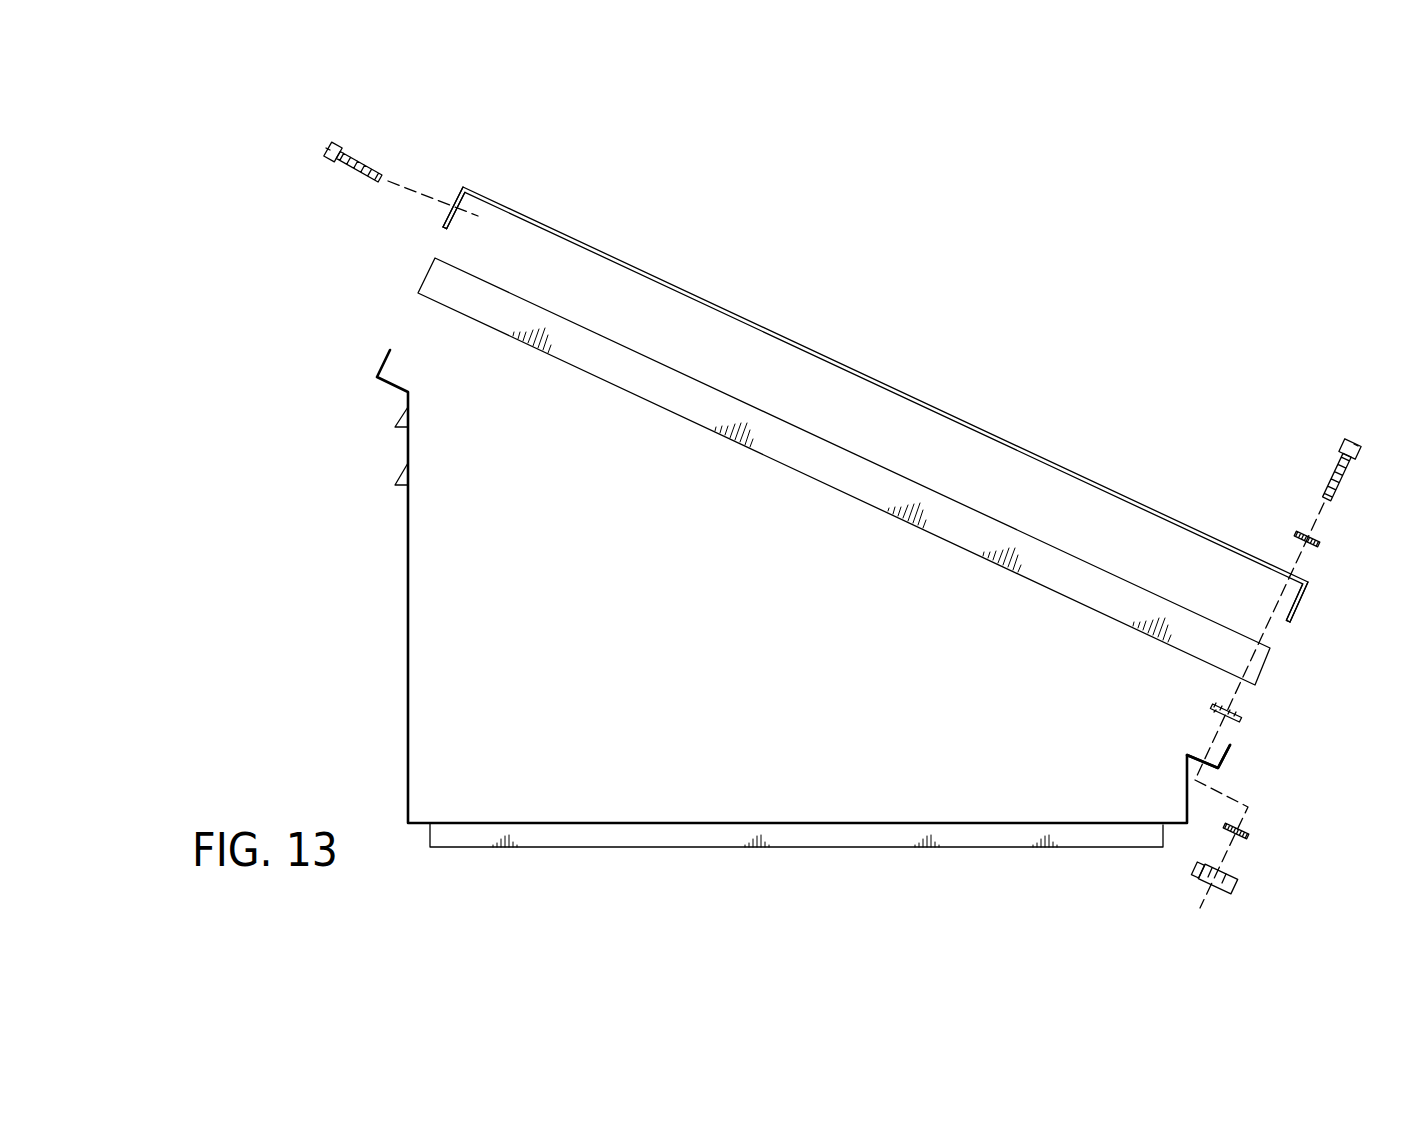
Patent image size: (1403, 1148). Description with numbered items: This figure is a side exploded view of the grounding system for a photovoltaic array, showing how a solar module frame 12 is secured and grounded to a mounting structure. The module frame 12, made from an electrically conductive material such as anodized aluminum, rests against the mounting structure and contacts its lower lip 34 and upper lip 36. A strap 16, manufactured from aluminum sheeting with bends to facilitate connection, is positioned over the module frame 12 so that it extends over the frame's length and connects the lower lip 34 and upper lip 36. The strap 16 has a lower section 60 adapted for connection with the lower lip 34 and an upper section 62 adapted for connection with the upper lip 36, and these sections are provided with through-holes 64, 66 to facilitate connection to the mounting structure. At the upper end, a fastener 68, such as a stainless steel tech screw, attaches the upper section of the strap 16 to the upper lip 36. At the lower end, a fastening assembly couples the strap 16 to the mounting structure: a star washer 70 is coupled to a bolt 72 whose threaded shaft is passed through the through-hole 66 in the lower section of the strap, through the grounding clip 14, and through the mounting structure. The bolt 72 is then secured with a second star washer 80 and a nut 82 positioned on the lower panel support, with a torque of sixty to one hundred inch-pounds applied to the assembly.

The module frame 12 is at (1266, 670).
The grounding clip 14 is at (1240, 718).
The strap 16 is at (1131, 500).
The lower lip 34 is at (1226, 759).
The upper lip 36 is at (388, 352).
The lower section 60 is at (1298, 614).
The upper section 62 is at (443, 214).
The through-hole 64 is at (456, 200).
The through-hole 66 is at (1308, 578).
The fastener 68 is at (329, 149).
The star washer 70 is at (1294, 535).
The bolt 72 is at (1340, 445).
The second star washer 80 is at (1248, 836).
The nut 82 is at (1233, 887).